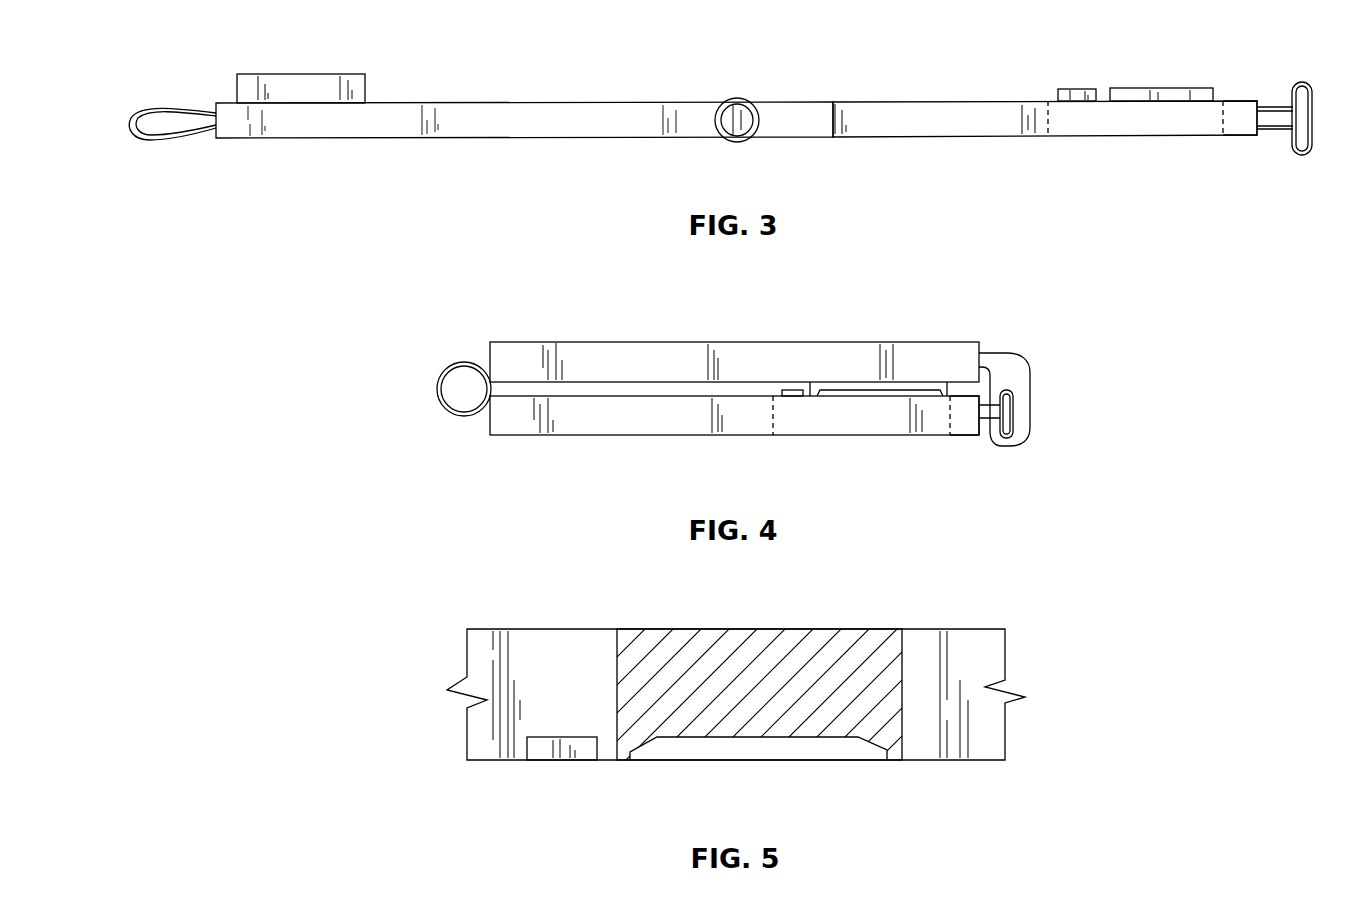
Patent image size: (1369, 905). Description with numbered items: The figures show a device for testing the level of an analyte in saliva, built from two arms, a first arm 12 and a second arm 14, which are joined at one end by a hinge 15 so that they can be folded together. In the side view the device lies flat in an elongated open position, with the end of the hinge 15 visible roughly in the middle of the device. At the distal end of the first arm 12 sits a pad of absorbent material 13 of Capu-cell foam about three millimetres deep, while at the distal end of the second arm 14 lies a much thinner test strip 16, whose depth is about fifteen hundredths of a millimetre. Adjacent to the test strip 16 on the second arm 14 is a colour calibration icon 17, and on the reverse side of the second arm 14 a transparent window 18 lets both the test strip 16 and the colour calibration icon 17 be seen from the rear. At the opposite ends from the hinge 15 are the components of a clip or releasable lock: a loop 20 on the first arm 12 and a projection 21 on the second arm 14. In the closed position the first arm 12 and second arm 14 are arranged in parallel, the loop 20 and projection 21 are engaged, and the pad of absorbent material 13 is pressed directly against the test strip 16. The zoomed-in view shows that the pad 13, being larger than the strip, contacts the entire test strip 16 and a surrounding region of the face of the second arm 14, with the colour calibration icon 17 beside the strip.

In FIG. 3, the first arm 12 is at (380, 120).
In FIG. 4, the first arm 12 is at (645, 358).
In FIG. 3, the pad of absorbent material 13 is at (312, 92).
In FIG. 4, the pad of absorbent material 13 is at (820, 392).
In FIG. 5, the pad of absorbent material 13 is at (770, 642).
In FIG. 3, the second arm 14 is at (930, 112).
In FIG. 4, the second arm 14 is at (626, 434).
In FIG. 5, the second arm 14 is at (736, 694).
In FIG. 3, the hinge 15 is at (748, 99).
In FIG. 4, the hinge 15 is at (458, 418).
In FIG. 3, the test strip 16 is at (1164, 88).
In FIG. 4, the test strip 16 is at (890, 400).
In FIG. 5, the test strip 16 is at (802, 752).
In FIG. 3, the colour calibration icon 17 is at (1078, 89).
In FIG. 4, the colour calibration icon 17 is at (790, 398).
In FIG. 5, the colour calibration icon 17 is at (560, 760).
In FIG. 3, the transparent window 18 is at (1156, 136).
In FIG. 4, the transparent window 18 is at (884, 426).
In FIG. 3, the loop 20 is at (144, 140).
In FIG. 4, the loop 20 is at (1020, 356).
In FIG. 3, the projection 21 is at (1302, 86).
In FIG. 4, the projection 21 is at (1008, 394).